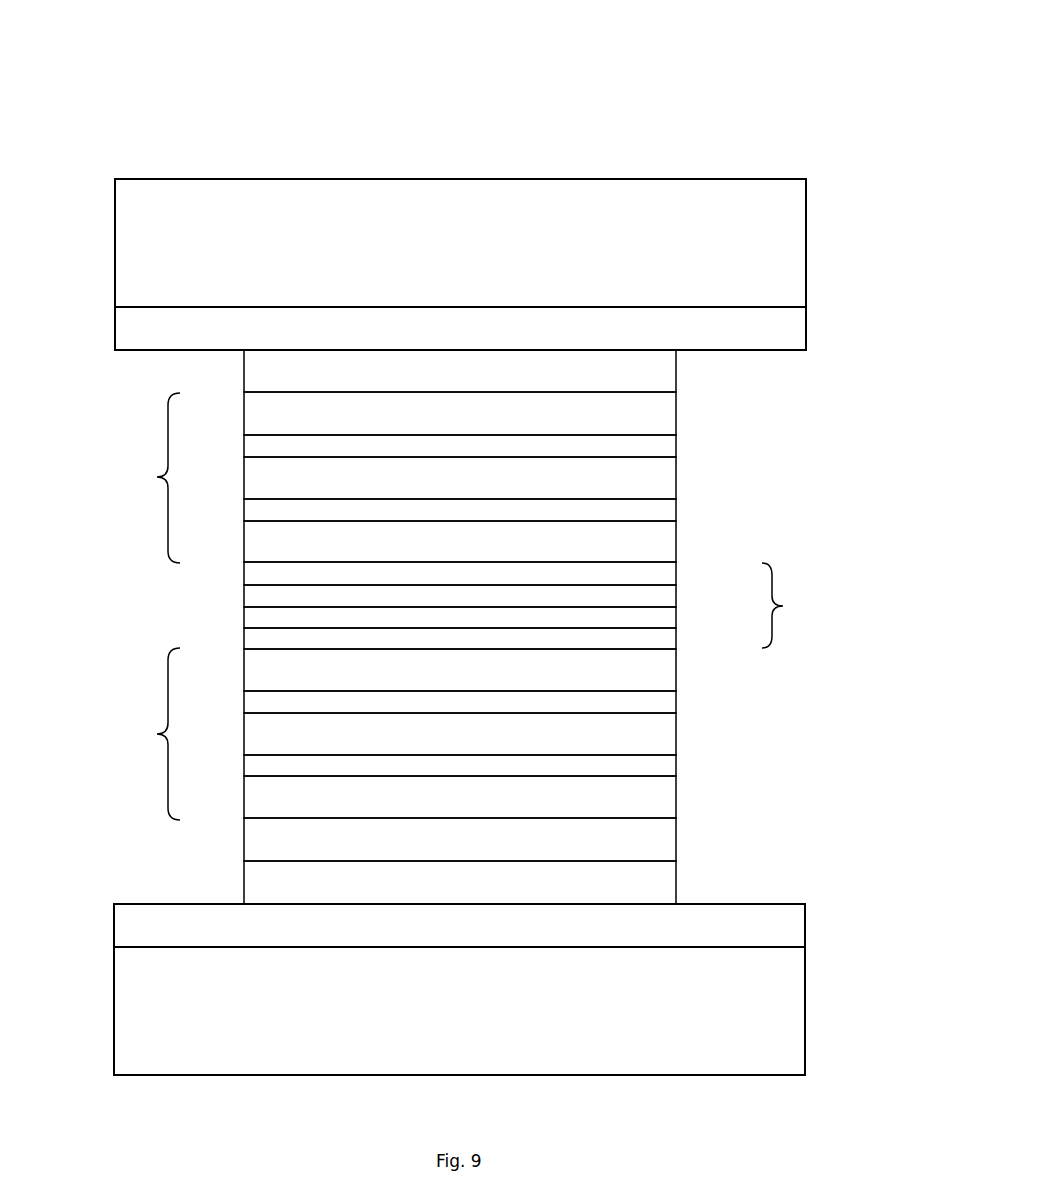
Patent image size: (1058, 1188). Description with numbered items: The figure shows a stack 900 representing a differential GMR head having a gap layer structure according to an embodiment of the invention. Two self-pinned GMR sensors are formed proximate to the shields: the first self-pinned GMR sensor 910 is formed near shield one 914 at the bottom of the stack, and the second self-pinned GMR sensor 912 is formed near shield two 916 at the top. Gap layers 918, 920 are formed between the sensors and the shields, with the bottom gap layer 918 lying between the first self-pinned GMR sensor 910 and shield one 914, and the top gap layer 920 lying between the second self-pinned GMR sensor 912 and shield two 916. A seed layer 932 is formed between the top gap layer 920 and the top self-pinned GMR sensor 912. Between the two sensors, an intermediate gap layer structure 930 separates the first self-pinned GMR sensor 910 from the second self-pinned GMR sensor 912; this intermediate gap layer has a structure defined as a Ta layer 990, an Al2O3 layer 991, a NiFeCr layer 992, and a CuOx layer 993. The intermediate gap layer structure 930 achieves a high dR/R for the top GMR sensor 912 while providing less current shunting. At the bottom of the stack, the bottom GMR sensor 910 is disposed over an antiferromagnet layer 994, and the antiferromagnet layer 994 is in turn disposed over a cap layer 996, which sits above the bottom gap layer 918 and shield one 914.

The stack 900 is at (176, 89).
The shield two 916 is at (806, 285).
The top gap layer 920 is at (806, 337).
The seed layer 932 is at (676, 371).
The second self-pinned GMR sensor 912 is at (82, 488).
The intermediate gap layer structure 930 is at (586, 621).
The CuOx layer 993 is at (460, 574).
The NiFeCr layer 992 is at (460, 596).
The Al2O3 layer 991 is at (460, 618).
The Ta layer 990 is at (460, 638).
The first self-pinned GMR sensor 910 is at (93, 764).
The antiferromagnet layer 994 is at (676, 841).
The cap layer 996 is at (676, 882).
The bottom gap layer 918 is at (805, 925).
The shield one 914 is at (805, 1020).